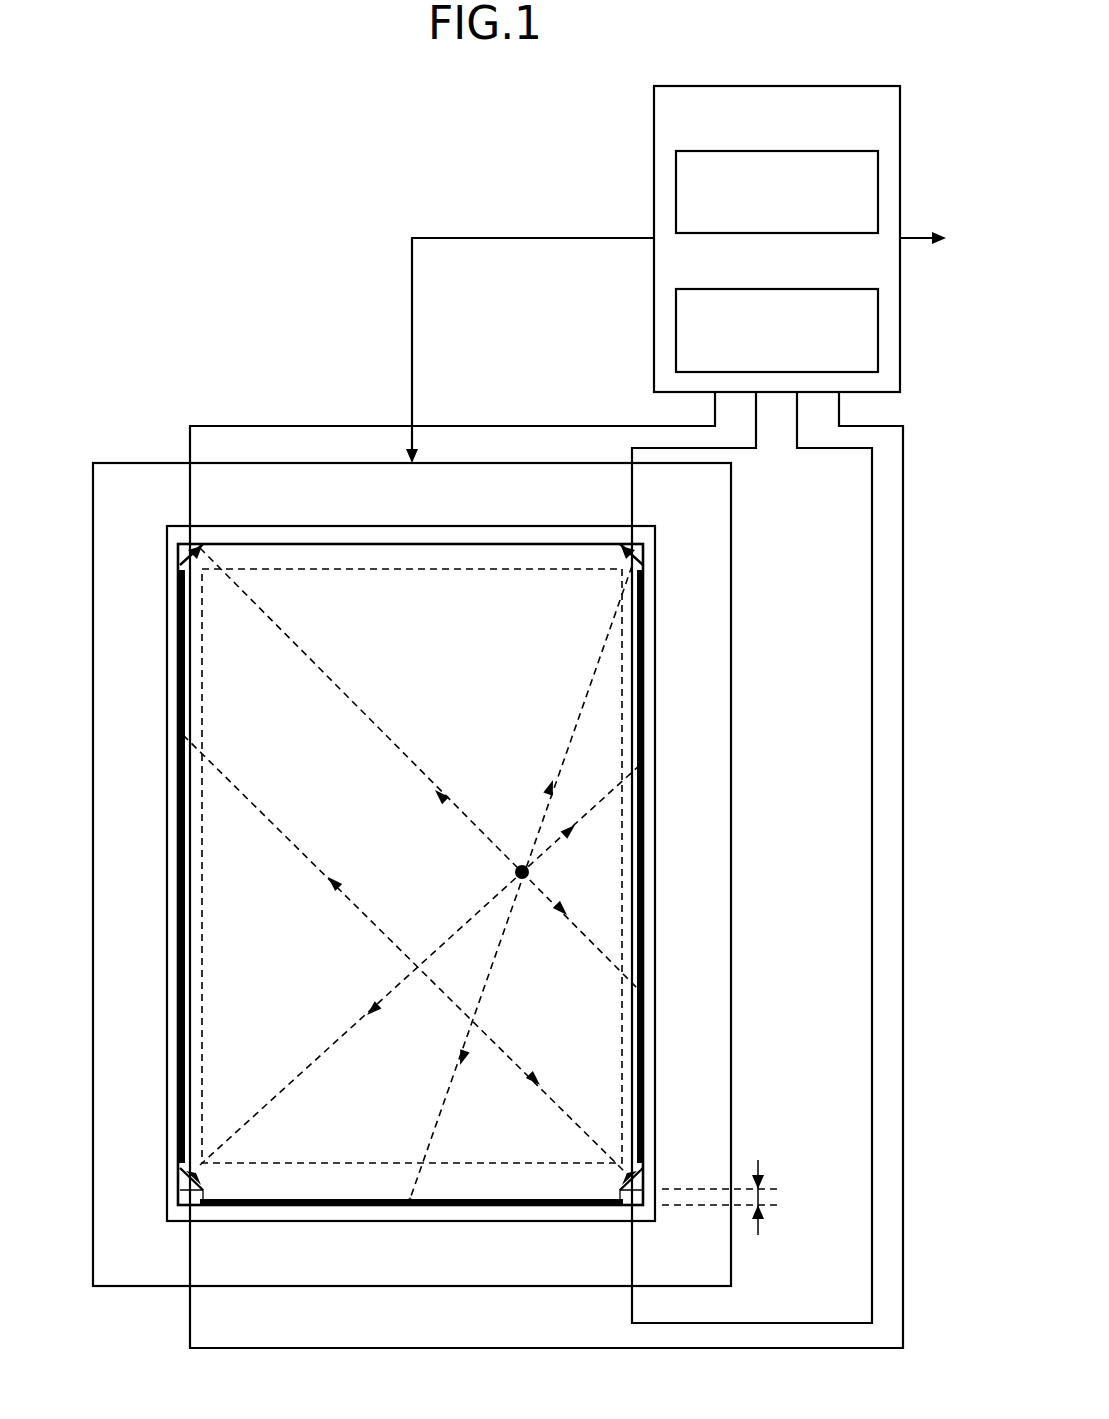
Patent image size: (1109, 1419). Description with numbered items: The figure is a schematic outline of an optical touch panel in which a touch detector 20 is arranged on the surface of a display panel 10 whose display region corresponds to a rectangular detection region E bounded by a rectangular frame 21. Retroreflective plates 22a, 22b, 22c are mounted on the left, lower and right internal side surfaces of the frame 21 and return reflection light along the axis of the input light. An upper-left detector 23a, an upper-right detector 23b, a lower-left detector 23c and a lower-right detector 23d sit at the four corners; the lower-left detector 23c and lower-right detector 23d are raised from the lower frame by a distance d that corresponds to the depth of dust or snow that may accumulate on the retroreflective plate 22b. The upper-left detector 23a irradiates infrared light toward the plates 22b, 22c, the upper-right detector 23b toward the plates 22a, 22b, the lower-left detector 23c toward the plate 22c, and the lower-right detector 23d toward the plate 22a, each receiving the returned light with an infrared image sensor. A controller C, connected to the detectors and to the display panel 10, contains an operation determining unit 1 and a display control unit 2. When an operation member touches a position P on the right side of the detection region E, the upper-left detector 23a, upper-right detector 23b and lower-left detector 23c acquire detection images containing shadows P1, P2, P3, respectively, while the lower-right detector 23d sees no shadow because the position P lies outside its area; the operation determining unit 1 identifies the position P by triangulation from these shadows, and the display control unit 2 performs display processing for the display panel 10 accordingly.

The controller C is at (900, 101).
The operation determining unit 1 is at (878, 191).
The display control unit 2 is at (878, 312).
The display panel 10 is at (120, 463).
The detection region E is at (246, 569).
The touch detector 20 is at (170, 625).
The frame 21 is at (167, 680).
The retroreflective plate 22a is at (178, 787).
The retroreflective plate 22b is at (306, 1195).
The retroreflective plate 22c is at (640, 880).
The upper-left detector 23a is at (187, 552).
The upper-right detector 23b is at (643, 553).
The lower-left detector 23c is at (187, 1187).
The lower-right detector 23d is at (632, 1182).
The position P is at (520, 864).
The shadow P1 is at (640, 985).
The shadow P2 is at (405, 1200).
The shadow P3 is at (640, 765).
The distance d is at (762, 1197).